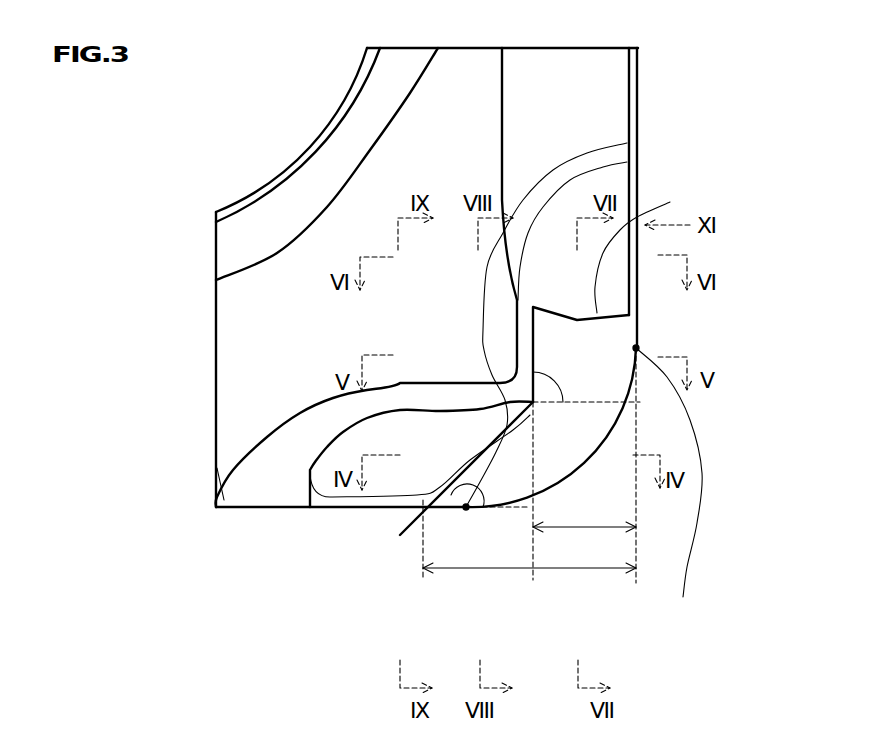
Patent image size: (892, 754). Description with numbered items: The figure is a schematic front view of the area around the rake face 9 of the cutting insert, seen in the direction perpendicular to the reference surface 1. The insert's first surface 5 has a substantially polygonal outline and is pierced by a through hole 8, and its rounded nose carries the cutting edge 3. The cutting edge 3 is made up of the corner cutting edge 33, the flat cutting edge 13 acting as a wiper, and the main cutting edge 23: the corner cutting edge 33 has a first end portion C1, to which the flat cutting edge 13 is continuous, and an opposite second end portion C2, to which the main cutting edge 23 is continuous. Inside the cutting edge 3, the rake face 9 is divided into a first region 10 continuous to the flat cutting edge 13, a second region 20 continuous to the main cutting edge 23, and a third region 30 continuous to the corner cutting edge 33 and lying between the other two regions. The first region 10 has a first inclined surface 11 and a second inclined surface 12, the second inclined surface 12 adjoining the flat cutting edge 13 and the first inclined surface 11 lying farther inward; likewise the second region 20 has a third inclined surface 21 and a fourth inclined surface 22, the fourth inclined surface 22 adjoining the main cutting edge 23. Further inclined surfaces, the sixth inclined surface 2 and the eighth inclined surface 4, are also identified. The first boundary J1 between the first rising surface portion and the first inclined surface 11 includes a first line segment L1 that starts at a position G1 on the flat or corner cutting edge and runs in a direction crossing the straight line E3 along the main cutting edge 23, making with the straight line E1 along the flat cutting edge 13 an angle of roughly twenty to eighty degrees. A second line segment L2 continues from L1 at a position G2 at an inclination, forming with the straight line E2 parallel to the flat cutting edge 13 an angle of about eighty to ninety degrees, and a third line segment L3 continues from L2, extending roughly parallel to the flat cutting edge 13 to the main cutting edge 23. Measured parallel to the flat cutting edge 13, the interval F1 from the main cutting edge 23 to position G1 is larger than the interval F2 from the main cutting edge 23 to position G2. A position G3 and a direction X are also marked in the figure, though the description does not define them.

The reference surface 1 is at (475, 360).
The sixth inclined surface 2 is at (400, 505).
The cutting edge 3 is at (754, 620).
The eighth inclined surface 4 is at (285, 452).
The first surface 5 is at (268, 415).
The through hole 8 is at (390, 102).
The rake face 9 is at (367, 291).
The first region 10 is at (338, 460).
The first inclined surface 11 is at (553, 450).
The second inclined surface 12 is at (305, 460).
The flat cutting edge 13 is at (363, 507).
The second region 20 is at (374, 137).
The third inclined surface 21 is at (563, 117).
The fourth inclined surface 22 is at (628, 139).
The main cutting edge 23 is at (637, 280).
The third region 30 is at (343, 453).
The corner cutting edge 33 is at (557, 483).
The first line segment L1 is at (627, 143).
The second line segment L2 is at (627, 162).
The third line segment L3 is at (670, 202).
The first boundary J1 is at (632, 317).
The position G1 is at (432, 498).
The position G2 is at (533, 402).
The gap G3 is at (637, 314).
The straight line E1 is at (511, 509).
The straight line E2 is at (637, 403).
The straight line E3 is at (636, 538).
The interval F1 is at (529, 546).
The interval F2 is at (584, 465).
The first end portion C1 is at (466, 507).
The second end portion C2 is at (669, 487).
The direction X is at (378, 518).